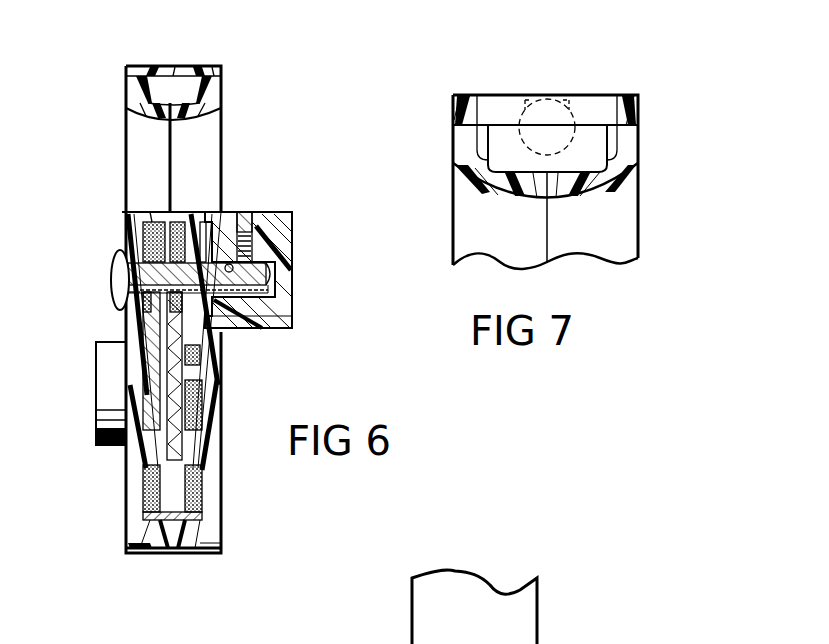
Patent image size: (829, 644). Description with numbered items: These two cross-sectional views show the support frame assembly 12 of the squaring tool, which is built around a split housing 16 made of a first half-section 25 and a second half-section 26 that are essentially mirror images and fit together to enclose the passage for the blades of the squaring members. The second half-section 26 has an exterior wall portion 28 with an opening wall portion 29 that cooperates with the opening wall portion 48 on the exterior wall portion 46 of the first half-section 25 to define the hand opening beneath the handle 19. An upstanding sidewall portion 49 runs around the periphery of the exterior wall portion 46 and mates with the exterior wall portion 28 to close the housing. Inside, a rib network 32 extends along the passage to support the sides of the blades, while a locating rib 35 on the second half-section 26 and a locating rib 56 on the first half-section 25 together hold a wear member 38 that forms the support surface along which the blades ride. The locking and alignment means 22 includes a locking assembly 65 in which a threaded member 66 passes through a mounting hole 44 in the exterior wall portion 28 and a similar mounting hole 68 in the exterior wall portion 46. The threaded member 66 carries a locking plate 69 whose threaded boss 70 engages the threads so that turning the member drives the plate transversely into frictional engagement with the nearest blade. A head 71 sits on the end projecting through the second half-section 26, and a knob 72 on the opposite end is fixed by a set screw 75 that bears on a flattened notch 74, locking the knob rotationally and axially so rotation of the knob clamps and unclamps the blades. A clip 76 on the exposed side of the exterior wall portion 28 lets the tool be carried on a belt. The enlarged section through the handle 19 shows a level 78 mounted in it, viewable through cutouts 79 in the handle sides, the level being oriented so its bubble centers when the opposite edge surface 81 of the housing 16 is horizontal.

In FIG. 6, the support frame assembly 12 is at (226, 100).
In FIG. 6, the housing 16 is at (124, 530).
In FIG. 6, the handle 19 is at (206, 70).
In FIG. 6, the locking and alignment means 22 is at (256, 200).
In FIG. 6, the first half-section 25 is at (223, 128).
In FIG. 6, the second half-section 26 is at (124, 148).
In FIG. 6, the exterior wall portion 28 is at (132, 485).
In FIG. 6, the opening wall portion 29 is at (151, 212).
In FIG. 6, the rib network 32 is at (168, 455).
In FIG. 6, the locating rib 35 is at (166, 553).
In FIG. 6, the wear member 38 is at (200, 495).
In FIG. 6, the mounting hole 44 is at (128, 292).
In FIG. 6, the exterior wall portion 46 is at (205, 400).
In FIG. 6, the opening wall portion 48 is at (187, 212).
In FIG. 6, the upstanding sidewall portion 49 is at (168, 72).
In FIG. 6, the locating rib 56 is at (190, 553).
In FIG. 6, the locking assembly 65 is at (291, 211).
In FIG. 6, the threaded member 66 is at (112, 275).
In FIG. 6, the mounting hole 68 is at (234, 212).
In FIG. 6, the locking plate 69 is at (148, 375).
In FIG. 6, the threaded boss 70 is at (145, 310).
In FIG. 6, the head 71 is at (113, 258).
In FIG. 6, the knob 72 is at (280, 260).
In FIG. 6, the notch 74 is at (236, 300).
In FIG. 6, the set screw 75 is at (253, 232).
In FIG. 6, the clip 76 is at (100, 400).
In FIG. 7, the level 78 is at (599, 92).
In FIG. 7, the cutouts 79 is at (463, 145).
In FIG. 6, the edge surface 81 is at (215, 549).